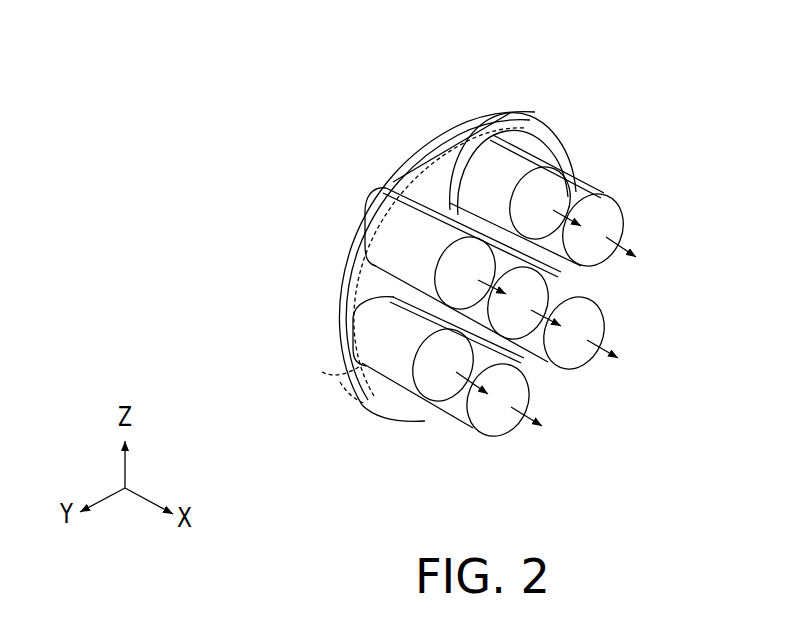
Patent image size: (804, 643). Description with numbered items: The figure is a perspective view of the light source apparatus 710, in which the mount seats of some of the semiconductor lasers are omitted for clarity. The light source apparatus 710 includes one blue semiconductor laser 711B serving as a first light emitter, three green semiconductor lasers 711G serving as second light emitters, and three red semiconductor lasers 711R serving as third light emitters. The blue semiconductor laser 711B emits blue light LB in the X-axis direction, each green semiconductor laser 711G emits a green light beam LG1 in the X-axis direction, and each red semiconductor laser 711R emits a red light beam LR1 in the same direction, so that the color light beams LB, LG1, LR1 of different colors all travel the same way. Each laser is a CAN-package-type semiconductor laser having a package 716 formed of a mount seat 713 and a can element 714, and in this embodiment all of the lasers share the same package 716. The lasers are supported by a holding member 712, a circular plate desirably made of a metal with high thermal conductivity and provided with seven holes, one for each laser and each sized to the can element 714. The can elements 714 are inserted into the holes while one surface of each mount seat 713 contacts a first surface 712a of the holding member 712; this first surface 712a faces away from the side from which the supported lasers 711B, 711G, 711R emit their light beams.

The light source apparatus 710 is at (460, 101).
The red semiconductor laser 711R is at (456, 217).
The green semiconductor laser 711G is at (534, 147).
The blue semiconductor laser 711B is at (507, 242).
The holding member 712 is at (366, 402).
The first surface 712a is at (350, 390).
The mount seat 713 is at (368, 218).
The can element 714 is at (376, 180).
The package 716 is at (262, 148).
The red light beam LR1 is at (622, 252).
The blue light LB is at (565, 305).
The green light beam LG1 is at (608, 352).